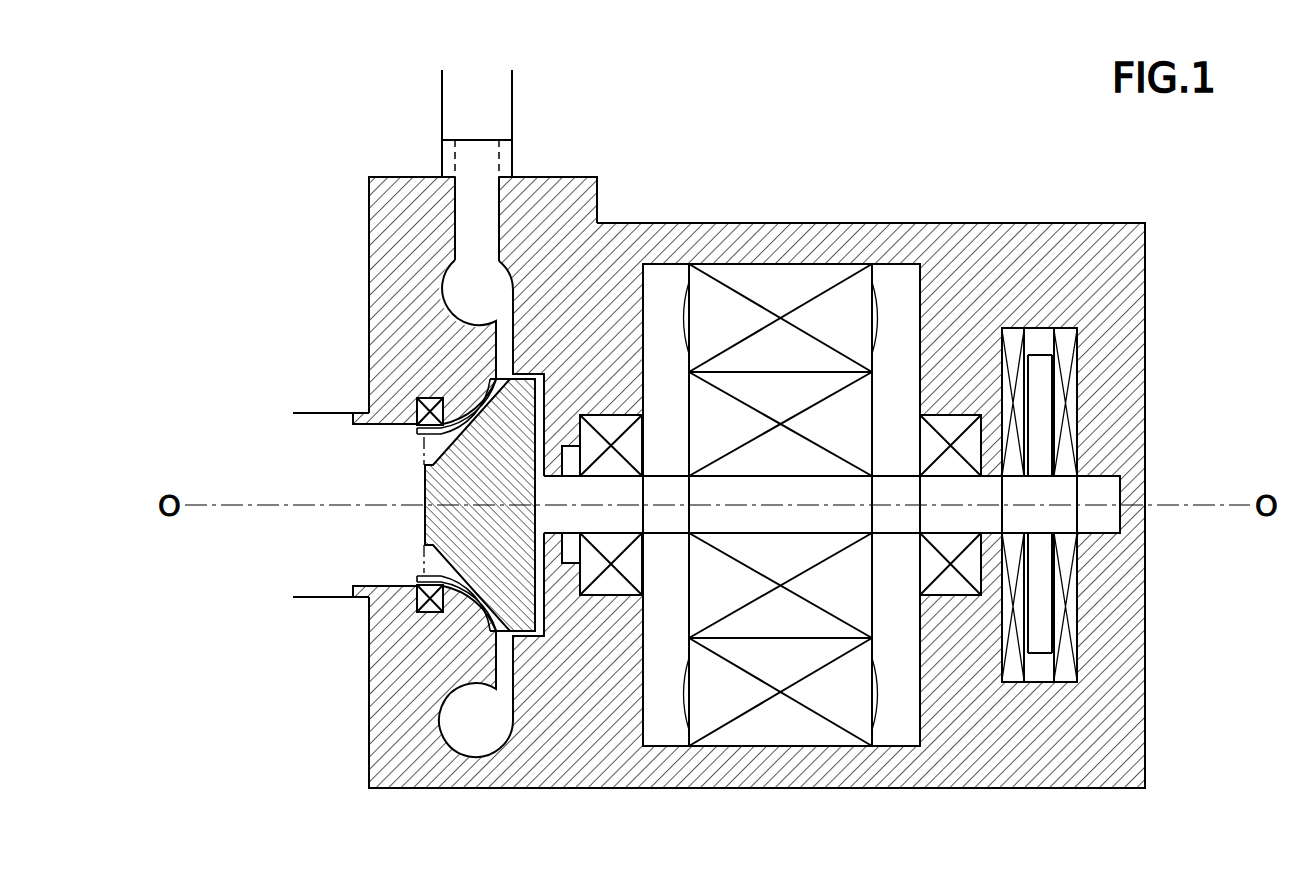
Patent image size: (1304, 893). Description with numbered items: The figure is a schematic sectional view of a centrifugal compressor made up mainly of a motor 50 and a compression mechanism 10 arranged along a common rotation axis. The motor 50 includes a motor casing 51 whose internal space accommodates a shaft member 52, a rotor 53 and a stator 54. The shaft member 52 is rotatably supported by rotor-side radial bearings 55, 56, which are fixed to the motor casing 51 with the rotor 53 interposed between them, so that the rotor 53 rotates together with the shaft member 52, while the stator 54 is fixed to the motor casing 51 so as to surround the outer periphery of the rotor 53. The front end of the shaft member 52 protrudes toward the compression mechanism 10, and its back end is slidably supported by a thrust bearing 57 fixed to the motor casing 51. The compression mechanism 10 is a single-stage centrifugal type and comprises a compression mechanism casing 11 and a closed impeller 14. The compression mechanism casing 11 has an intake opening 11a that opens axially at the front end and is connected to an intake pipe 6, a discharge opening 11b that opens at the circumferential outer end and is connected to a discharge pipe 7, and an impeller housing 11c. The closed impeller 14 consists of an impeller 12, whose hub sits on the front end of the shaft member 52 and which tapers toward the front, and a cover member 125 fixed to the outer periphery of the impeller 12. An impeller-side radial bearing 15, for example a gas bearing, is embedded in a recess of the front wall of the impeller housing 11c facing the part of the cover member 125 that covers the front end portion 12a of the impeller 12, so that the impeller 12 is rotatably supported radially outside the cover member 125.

The intake pipe 6 is at (313, 597).
The discharge pipe 7 is at (442, 131).
The compression mechanism 10 is at (312, 264).
The compression mechanism casing 11 is at (387, 582).
The intake opening 11a is at (367, 433).
The discharge opening 11b is at (481, 140).
The impeller housing 11c is at (394, 480).
The impeller 12 is at (423, 532).
The front end portion 12a is at (422, 447).
The closed impeller 14 is at (376, 515).
The impeller-side radial bearing 15 is at (417, 410).
The cover member 125 is at (483, 398).
The motor 50 is at (700, 180).
The motor casing 51 is at (752, 223).
The shaft member 52 is at (892, 535).
The rotor 53 is at (755, 622).
The stator 54 is at (836, 698).
The rotor-side radial bearing 55 is at (615, 597).
The rotor-side radial bearing 56 is at (950, 597).
The thrust bearing 57 is at (1063, 330).